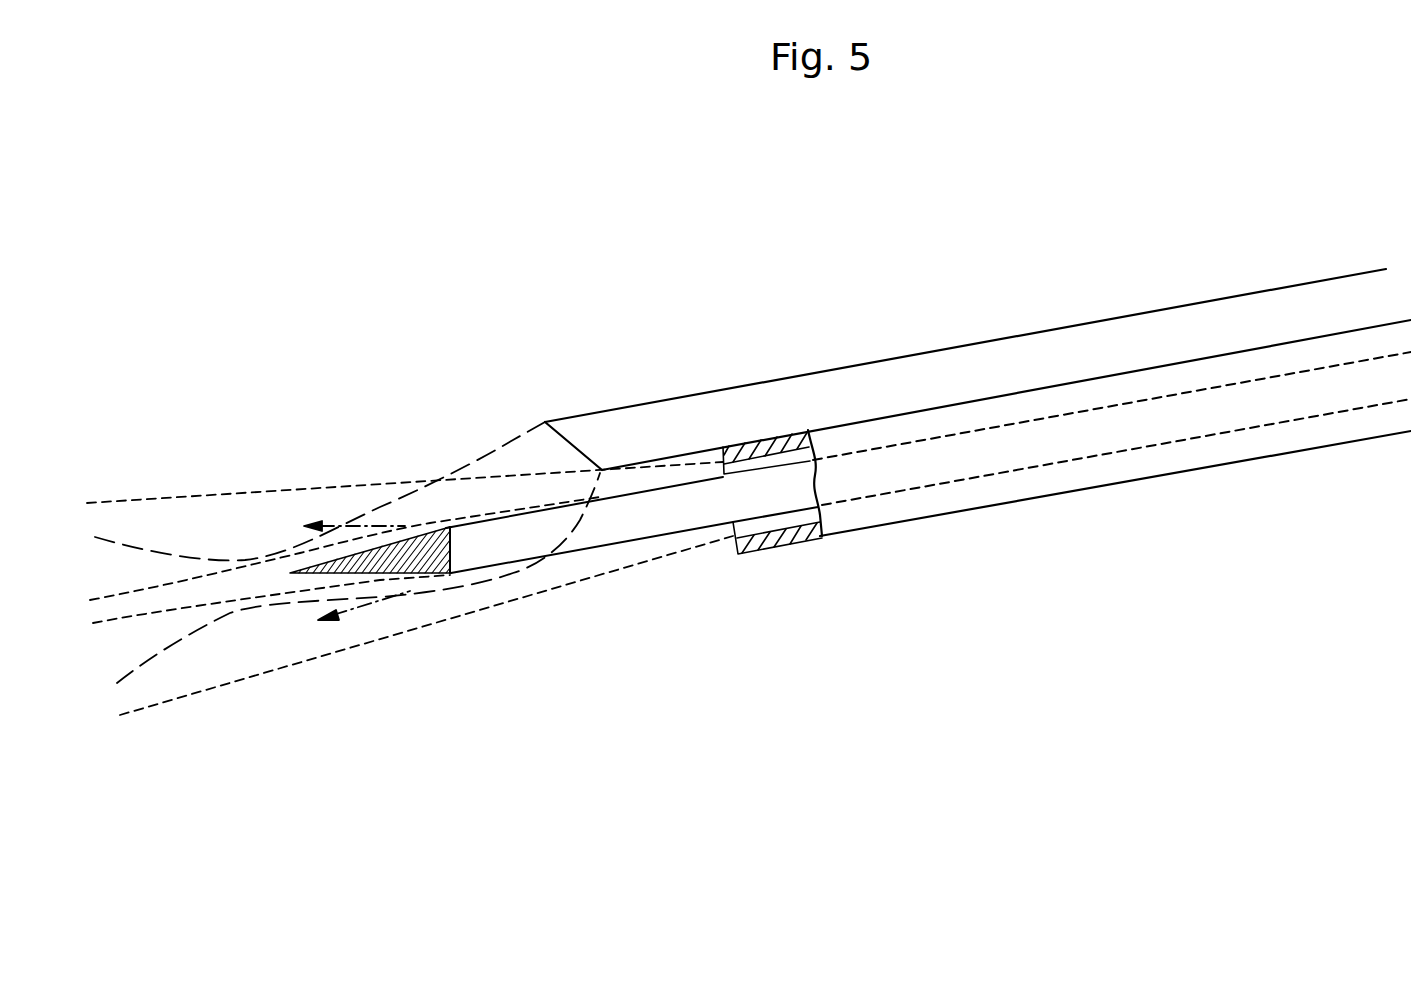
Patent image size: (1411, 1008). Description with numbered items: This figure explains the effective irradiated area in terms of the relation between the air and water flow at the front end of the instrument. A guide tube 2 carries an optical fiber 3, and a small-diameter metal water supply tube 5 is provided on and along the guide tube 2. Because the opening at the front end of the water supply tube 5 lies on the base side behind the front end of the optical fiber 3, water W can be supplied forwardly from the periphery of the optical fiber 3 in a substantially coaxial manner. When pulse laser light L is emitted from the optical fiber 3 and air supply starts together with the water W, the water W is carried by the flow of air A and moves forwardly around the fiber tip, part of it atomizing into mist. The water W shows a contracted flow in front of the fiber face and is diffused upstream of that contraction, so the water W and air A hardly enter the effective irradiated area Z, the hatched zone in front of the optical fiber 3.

The water supply tube 5 is at (872, 385).
The guide tube 2 is at (971, 452).
The optical fiber 3 is at (655, 515).
The air A is at (222, 493).
The water W is at (290, 545).
The pulse laser light L is at (387, 523).
The effective irradiated area Z is at (395, 557).